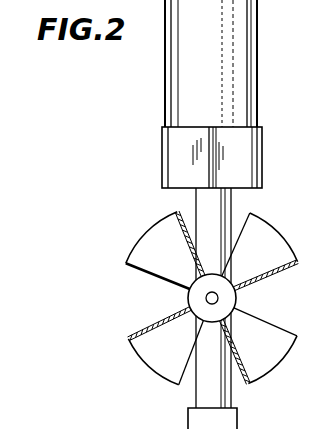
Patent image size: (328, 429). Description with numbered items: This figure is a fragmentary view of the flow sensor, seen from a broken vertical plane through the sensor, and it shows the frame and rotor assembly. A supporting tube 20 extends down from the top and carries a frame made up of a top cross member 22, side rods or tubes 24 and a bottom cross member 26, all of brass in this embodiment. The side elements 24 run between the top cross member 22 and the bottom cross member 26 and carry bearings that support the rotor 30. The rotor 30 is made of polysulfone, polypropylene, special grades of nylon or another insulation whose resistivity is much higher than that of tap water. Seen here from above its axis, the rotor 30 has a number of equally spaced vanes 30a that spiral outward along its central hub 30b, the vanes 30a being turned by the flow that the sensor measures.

The supporting tube 20 is at (249, 27).
The top cross member 22 is at (168, 153).
The side rods or tubes 24 is at (220, 204).
The bottom cross member 26 is at (188, 418).
The rotor 30 is at (196, 298).
The vanes 30a is at (264, 266).
The hub 30b is at (193, 297).